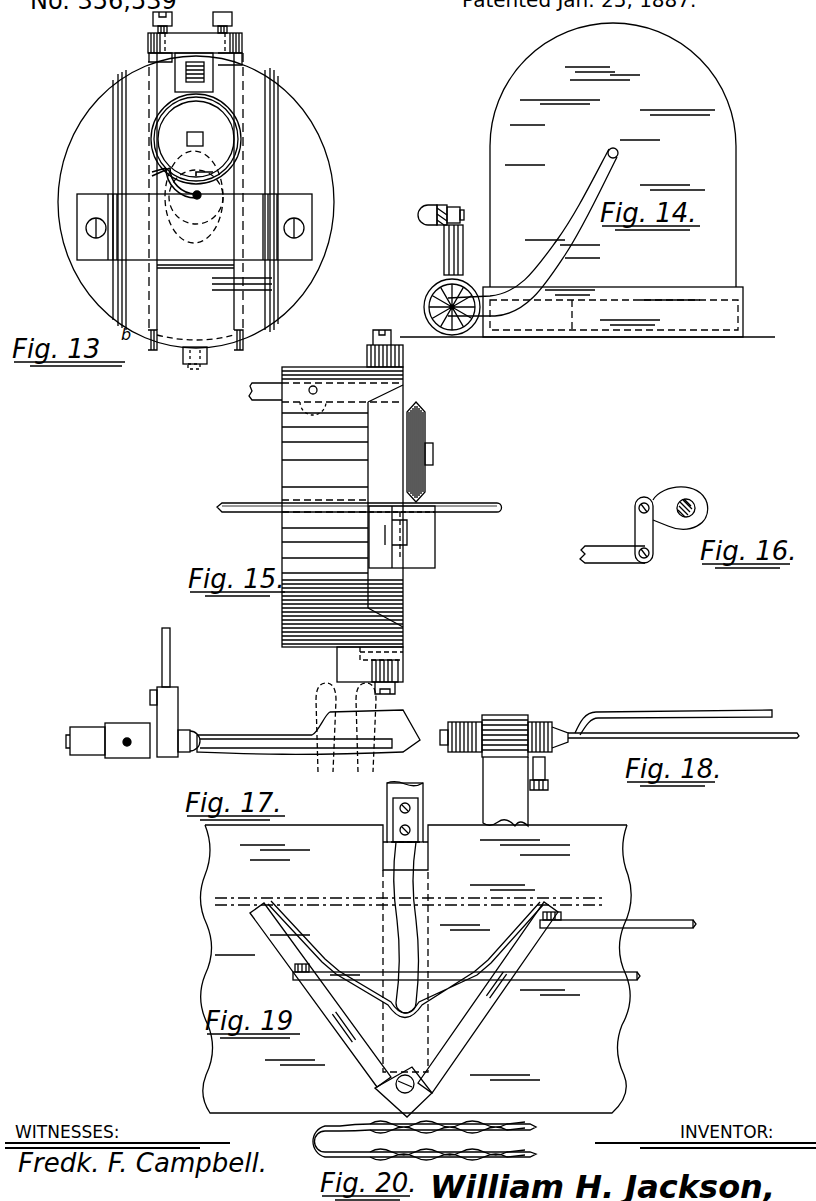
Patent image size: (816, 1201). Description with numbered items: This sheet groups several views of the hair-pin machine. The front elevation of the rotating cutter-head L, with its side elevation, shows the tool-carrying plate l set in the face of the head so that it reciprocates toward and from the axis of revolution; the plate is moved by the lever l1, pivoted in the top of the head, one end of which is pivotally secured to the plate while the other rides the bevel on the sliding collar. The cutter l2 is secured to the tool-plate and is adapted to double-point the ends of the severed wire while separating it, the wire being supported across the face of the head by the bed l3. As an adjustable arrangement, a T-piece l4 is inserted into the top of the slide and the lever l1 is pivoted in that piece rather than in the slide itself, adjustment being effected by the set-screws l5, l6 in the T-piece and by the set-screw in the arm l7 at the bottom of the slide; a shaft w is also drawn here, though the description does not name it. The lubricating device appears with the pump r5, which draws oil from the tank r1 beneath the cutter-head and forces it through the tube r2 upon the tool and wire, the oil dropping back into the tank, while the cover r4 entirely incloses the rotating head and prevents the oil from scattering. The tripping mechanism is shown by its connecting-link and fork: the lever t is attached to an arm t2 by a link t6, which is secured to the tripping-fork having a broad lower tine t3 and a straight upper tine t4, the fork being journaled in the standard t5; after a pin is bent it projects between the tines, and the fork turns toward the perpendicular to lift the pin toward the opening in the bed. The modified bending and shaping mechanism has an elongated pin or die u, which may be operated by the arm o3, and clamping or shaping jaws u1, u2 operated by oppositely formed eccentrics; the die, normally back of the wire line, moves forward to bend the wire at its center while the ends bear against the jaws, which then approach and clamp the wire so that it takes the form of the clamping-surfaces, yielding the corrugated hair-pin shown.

In FIG. 13b, the rotating cutter-head L is at (83, 175).
In FIG. 15, the rotating cutter-head L is at (342, 507).
In FIG. 13b, the tool-carrying plate l is at (190, 22).
In FIG. 15, the tool-carrying plate l is at (403, 657).
In FIG. 13b, the lever l1 is at (205, 78).
In FIG. 15, the lever l1 is at (270, 398).
In FIG. 13b, the cutter l2 is at (196, 139).
In FIG. 15, the cutter l2 is at (425, 434).
In FIG. 13b, the bed l3 is at (180, 215).
In FIG. 15, the bed l3 is at (402, 537).
In FIG. 15, the T-piece l4 is at (403, 352).
In FIG. 13b, the set-screw l5 is at (150, 20).
In FIG. 13b, the set-screw l6 is at (232, 22).
In FIG. 13b, the arm l7 is at (204, 361).
In FIG. 15, the arm l7 is at (400, 680).
In FIG. 15, the shaft w is at (369, 504).
In FIG. 14, the tank r1 is at (614, 312).
In FIG. 14, the tube r2 is at (532, 265).
In FIG. 14, the cover r4 is at (551, 91).
In FIG. 14, the pump r5 is at (443, 270).
In FIG. 16, the lever t is at (610, 566).
In FIG. 17, the lever t is at (174, 657).
In FIG. 16, the arm t2 is at (680, 508).
In FIG. 17, the arm t2 is at (180, 707).
In FIG. 18, the arm t2 is at (541, 720).
In FIG. 17, the broad lower tine t3 is at (413, 771).
In FIG. 18, the broad lower tine t3 is at (744, 745).
In FIG. 17, the straight upper tine t4 is at (221, 733).
In FIG. 18, the straight upper tine t4 is at (647, 713).
In FIG. 17, the standard t5 is at (131, 762).
In FIG. 18, the standard t5 is at (505, 791).
In FIG. 16, the link t6 is at (632, 528).
In FIG. 18, the link t6 is at (548, 762).
In FIG. 19, the arm o3 is at (425, 800).
In FIG. 19, the elongated pin or die u is at (420, 945).
In FIG. 19, the clamping or shaping jaw u1 is at (272, 940).
In FIG. 19, the clamping or shaping jaw u2 is at (538, 942).